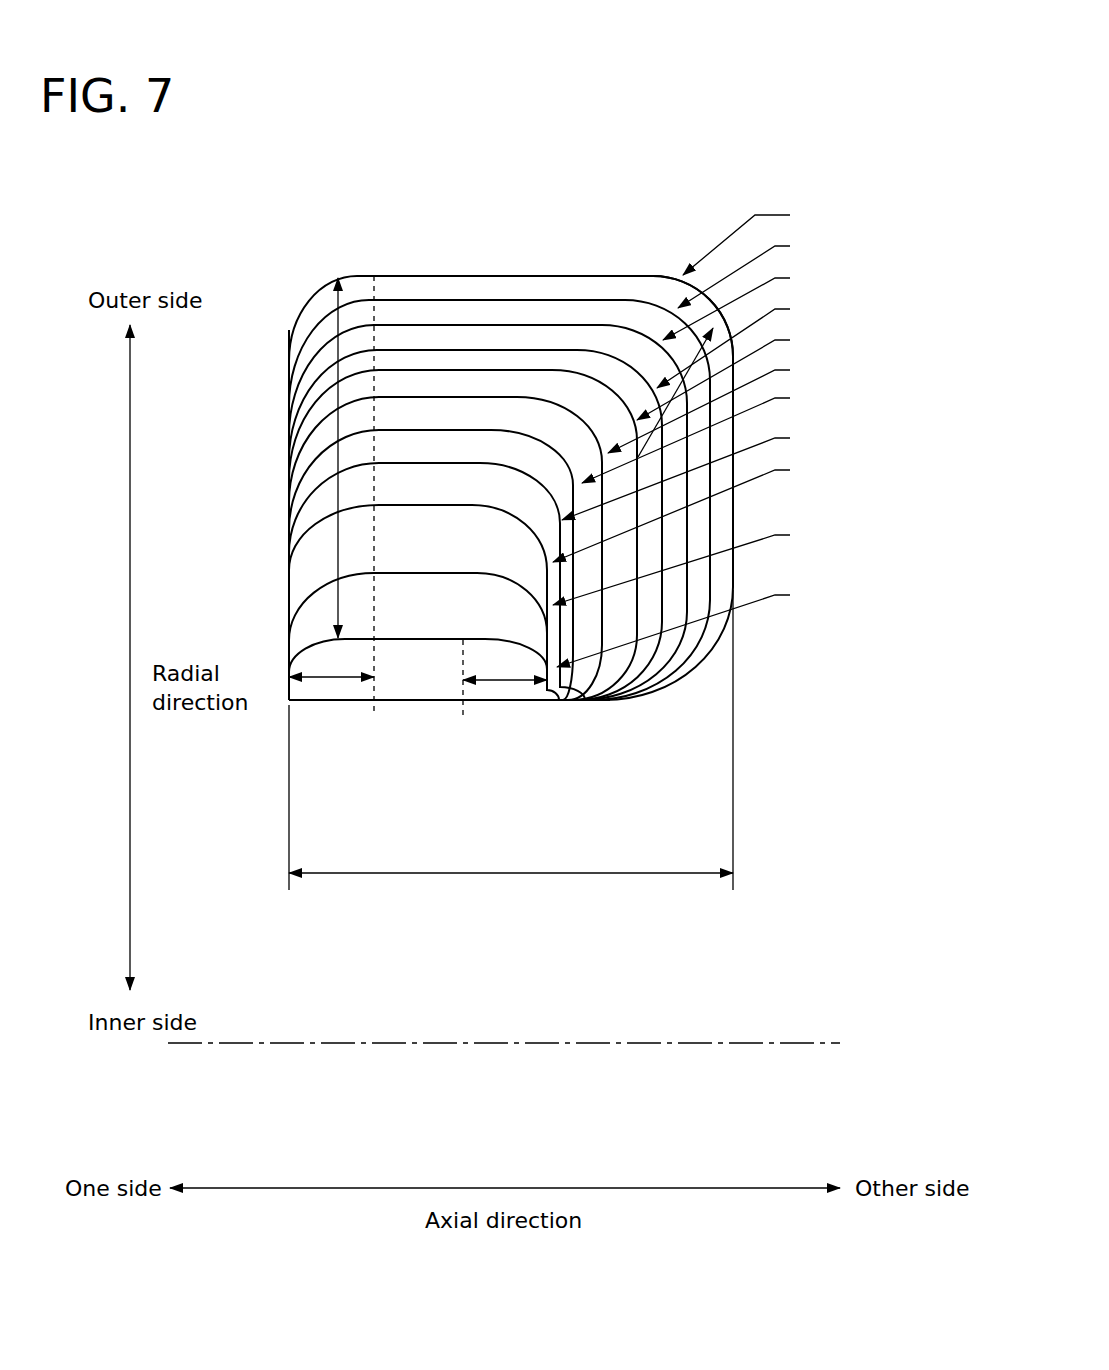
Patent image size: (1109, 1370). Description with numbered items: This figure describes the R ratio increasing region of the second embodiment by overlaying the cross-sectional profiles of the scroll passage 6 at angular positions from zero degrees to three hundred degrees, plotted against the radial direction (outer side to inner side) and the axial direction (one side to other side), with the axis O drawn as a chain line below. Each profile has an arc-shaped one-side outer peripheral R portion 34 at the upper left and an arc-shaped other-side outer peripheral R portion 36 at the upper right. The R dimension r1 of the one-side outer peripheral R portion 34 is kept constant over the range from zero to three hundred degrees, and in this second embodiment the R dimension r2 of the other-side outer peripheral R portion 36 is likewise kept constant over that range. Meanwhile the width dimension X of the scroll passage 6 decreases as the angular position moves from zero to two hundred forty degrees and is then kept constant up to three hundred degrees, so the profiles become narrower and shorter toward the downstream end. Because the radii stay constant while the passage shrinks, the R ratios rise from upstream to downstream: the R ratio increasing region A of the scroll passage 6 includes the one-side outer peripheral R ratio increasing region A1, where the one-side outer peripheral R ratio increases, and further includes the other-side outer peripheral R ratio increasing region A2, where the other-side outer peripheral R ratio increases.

The scroll passage 6 is at (850, 188).
The one-side outer peripheral R portion 34 is at (317, 298).
The other-side outer peripheral R portion 36 is at (690, 292).
The R ratio increasing region A is at (590, 232).
The one-side outer peripheral R ratio increasing region A1 is at (338, 348).
The other-side outer peripheral R ratio increasing region A2 is at (525, 626).
The R dimension of the one-side outer peripheral R portion r1 is at (333, 678).
The R dimension of the other-side outer peripheral R portion r2 is at (505, 680).
The width dimension of the scroll passage X is at (511, 748).
The axis O is at (762, 1046).